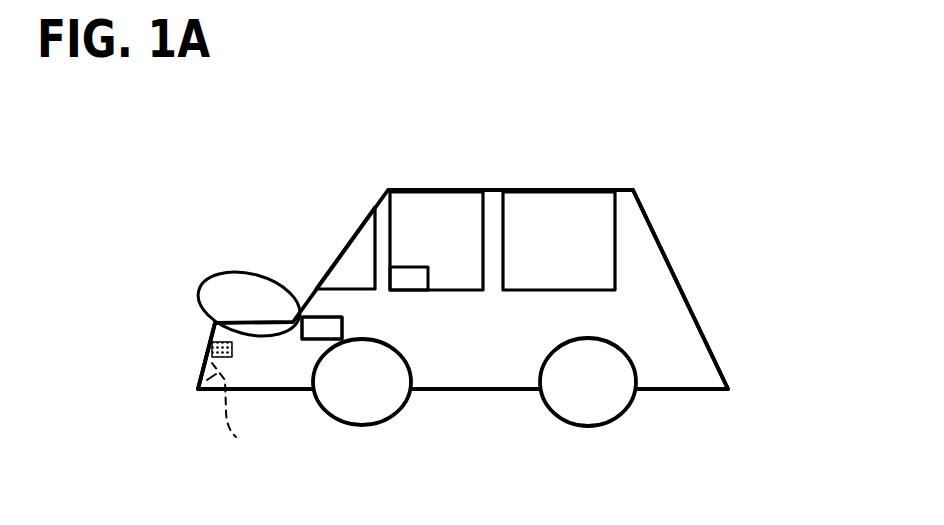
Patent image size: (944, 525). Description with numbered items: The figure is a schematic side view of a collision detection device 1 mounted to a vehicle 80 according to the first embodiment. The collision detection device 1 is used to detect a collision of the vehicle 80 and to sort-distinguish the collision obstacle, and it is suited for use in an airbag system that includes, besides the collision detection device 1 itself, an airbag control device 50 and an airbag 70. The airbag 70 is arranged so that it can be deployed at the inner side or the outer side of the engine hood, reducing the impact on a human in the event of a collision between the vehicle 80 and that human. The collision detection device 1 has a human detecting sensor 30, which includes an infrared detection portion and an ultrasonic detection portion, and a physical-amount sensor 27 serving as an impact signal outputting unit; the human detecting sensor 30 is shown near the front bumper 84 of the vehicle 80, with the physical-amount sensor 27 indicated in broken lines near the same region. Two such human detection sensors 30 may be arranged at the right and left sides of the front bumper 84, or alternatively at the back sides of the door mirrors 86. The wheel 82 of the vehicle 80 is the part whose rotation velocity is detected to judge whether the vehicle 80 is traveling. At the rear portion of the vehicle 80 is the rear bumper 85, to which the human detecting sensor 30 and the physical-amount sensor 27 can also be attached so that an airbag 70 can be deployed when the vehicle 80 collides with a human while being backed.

The collision detection device 1 is at (343, 326).
The airbag control device 50 is at (369, 240).
The airbag 70 is at (252, 273).
The vehicle 80 is at (655, 230).
The wheel 82 is at (403, 405).
The front bumper 84 is at (197, 377).
The rear bumper 85 is at (722, 360).
The door mirror 86 is at (413, 280).
The human detecting sensor 30 is at (212, 350).
The physical-amount sensor 27 is at (246, 420).